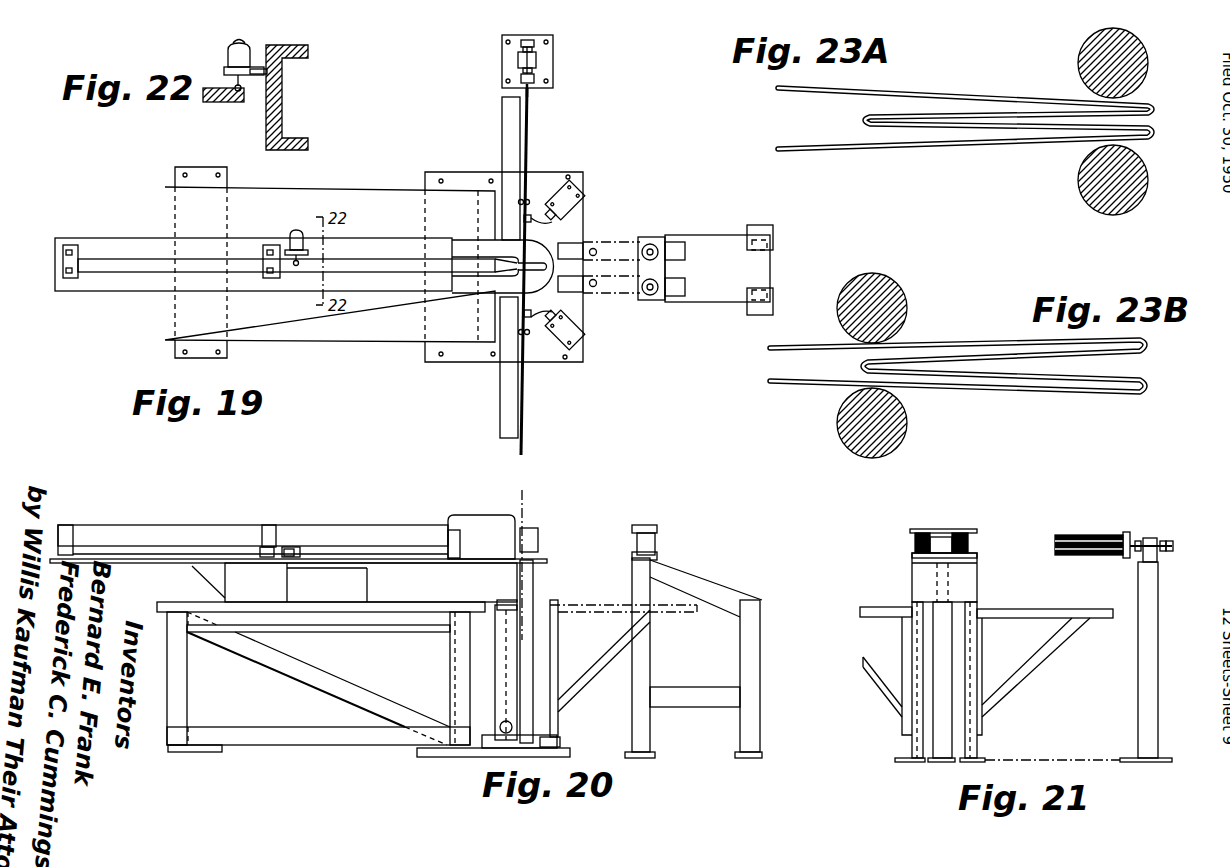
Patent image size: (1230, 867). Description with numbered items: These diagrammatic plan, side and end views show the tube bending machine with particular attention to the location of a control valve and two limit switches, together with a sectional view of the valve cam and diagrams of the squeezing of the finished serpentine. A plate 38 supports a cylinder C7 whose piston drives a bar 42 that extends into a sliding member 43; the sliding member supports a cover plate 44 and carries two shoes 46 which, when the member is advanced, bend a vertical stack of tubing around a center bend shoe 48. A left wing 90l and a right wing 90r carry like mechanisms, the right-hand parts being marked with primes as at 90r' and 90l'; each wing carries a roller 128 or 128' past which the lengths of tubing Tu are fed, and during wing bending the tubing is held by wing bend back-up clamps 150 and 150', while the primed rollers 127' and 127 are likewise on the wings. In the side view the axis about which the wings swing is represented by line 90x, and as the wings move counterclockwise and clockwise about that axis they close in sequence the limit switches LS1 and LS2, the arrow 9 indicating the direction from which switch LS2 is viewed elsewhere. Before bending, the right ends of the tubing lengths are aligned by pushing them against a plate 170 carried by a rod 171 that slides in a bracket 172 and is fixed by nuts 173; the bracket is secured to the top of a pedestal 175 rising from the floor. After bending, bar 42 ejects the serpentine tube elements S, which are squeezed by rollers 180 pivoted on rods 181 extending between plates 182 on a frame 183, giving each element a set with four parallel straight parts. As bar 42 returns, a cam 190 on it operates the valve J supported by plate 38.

In FIG. 19, the arrow 9 is at (452, 142).
In FIG. 22, the plate 38 is at (284, 92).
In FIG. 19, the plate 38 is at (374, 264).
In FIG. 20, the plate 38 is at (400, 577).
In FIG. 22, the bar 42 is at (222, 103).
In FIG. 19, the bar 42 is at (383, 262).
In FIG. 20, the bar 42 is at (392, 520).
In FIG. 20, the sliding member 43 is at (453, 530).
In FIG. 20, the cover plate 44 is at (475, 515).
In FIG. 19, the shoes 46 is at (497, 244).
In FIG. 19, the center bend shoe 48 is at (532, 261).
In FIG. 20, the center bend shoe 48 is at (538, 548).
In FIG. 19, the right wing 90r is at (488, 168).
In FIG. 21, the right wing 90r is at (1045, 660).
In FIG. 19, the left wing 90l is at (485, 367).
In FIG. 20, the left wing 90l is at (493, 658).
In FIG. 21, the left wing 90l is at (884, 660).
In FIG. 19, the right wing (primed) 90r' is at (601, 230).
In FIG. 19, the left wing (primed) 90l' is at (615, 301).
In FIG. 20, the left wing (primed) 90l' is at (618, 661).
In FIG. 20, the axis of rotation 90x is at (527, 503).
In FIG. 19, the switch actuator roller 127 is at (486, 359).
In FIG. 19, the switch actuator roller 127' is at (488, 176).
In FIG. 19, the roller 128 is at (549, 348).
In FIG. 19, the roller 128' is at (546, 181).
In FIG. 19, the wing bend back-up clamp 150 is at (598, 361).
In FIG. 19, the wing bend back-up clamp 150' is at (599, 157).
In FIG. 19, the plate 170 is at (537, 79).
In FIG. 21, the plate 170 is at (1128, 532).
In FIG. 19, the rod 171 is at (531, 40).
In FIG. 21, the rod 171 is at (1170, 541).
In FIG. 19, the bracket 172 is at (537, 59).
In FIG. 21, the bracket 172 is at (1143, 564).
In FIG. 19, the nuts 173 is at (537, 45).
In FIG. 21, the nuts 173 is at (1140, 541).
In FIG. 19, the pedestal 175 is at (502, 56).
In FIG. 21, the pedestal 175 is at (1138, 650).
In FIG. 19, the rollers 180 is at (660, 287).
In FIG. 23A, the rollers 180 is at (1082, 56).
In FIG. 23B, the rollers 180 is at (905, 292).
In FIG. 20, the rollers 180 is at (637, 543).
In FIG. 21, the rollers 180 is at (920, 530).
In FIG. 19, the rods 181 is at (660, 253).
In FIG. 20, the rods 181 is at (645, 525).
In FIG. 21, the rods 181 is at (958, 528).
In FIG. 19, the plates 182 is at (665, 263).
In FIG. 20, the plates 182 is at (657, 556).
In FIG. 21, the plates 182 is at (912, 557).
In FIG. 19, the frame 183 is at (736, 230).
In FIG. 20, the frame 183 is at (650, 739).
In FIG. 21, the frame 183 is at (978, 577).
In FIG. 22, the cam 190 is at (242, 91).
In FIG. 19, the cam 190 is at (306, 256).
In FIG. 20, the cam 190 is at (300, 535).
In FIG. 19, the cylinder C7 is at (139, 257).
In FIG. 20, the cylinder C7 is at (175, 525).
In FIG. 22, the valve J is at (228, 50).
In FIG. 19, the valve J is at (290, 233).
In FIG. 19, the limit switch LS1 is at (580, 332).
In FIG. 19, the limit switch LS2 is at (578, 190).
In FIG. 23A, the serpentine tube elements S is at (900, 90).
In FIG. 23B, the serpentine tube elements S is at (985, 343).
In FIG. 19, the lengths of tubing Tu is at (530, 112).
In FIG. 21, the lengths of tubing Tu is at (1100, 533).